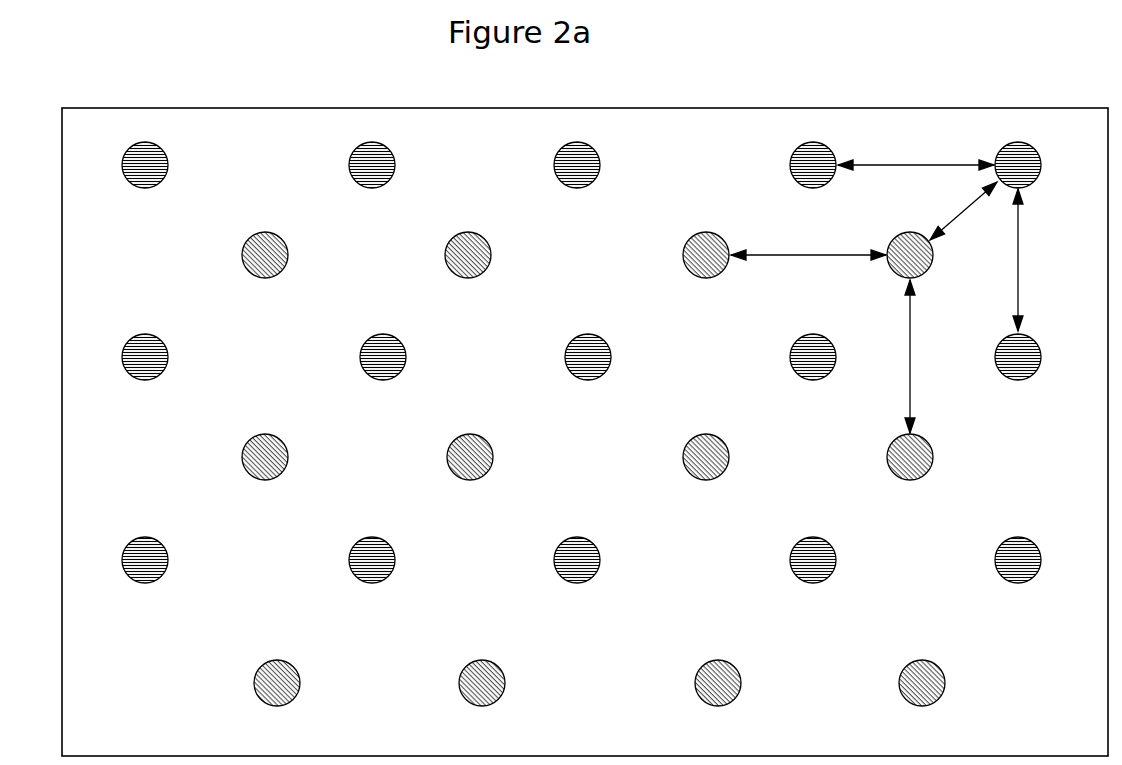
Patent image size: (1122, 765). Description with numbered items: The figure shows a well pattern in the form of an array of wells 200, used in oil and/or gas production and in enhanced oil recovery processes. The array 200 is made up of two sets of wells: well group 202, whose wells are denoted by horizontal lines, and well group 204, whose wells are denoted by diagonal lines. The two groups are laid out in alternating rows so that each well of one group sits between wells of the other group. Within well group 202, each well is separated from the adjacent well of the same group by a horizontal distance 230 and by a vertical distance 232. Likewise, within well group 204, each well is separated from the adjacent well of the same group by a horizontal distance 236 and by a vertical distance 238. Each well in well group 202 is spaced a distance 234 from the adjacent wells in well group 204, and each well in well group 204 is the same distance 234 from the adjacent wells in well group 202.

The array of wells 200 is at (146, 109).
The well group 202 is at (572, 340).
The well group 204 is at (447, 245).
The horizontal distance 230 is at (916, 154).
The vertical distance 232 is at (1037, 260).
The distance 234 is at (963, 209).
The horizontal distance 236 is at (808, 244).
The vertical distance 238 is at (893, 356).